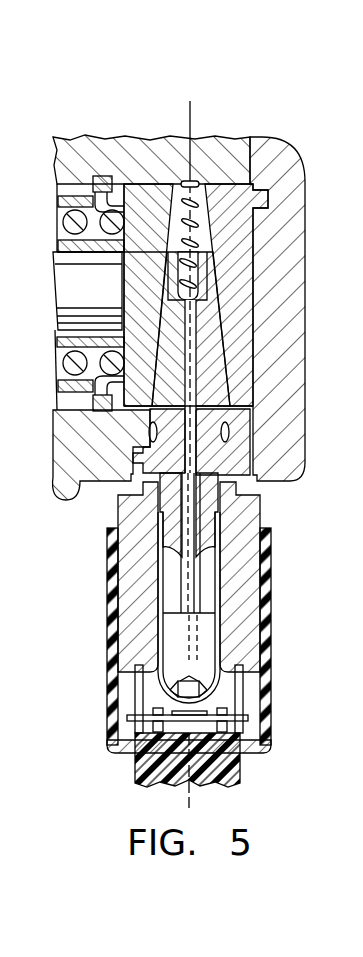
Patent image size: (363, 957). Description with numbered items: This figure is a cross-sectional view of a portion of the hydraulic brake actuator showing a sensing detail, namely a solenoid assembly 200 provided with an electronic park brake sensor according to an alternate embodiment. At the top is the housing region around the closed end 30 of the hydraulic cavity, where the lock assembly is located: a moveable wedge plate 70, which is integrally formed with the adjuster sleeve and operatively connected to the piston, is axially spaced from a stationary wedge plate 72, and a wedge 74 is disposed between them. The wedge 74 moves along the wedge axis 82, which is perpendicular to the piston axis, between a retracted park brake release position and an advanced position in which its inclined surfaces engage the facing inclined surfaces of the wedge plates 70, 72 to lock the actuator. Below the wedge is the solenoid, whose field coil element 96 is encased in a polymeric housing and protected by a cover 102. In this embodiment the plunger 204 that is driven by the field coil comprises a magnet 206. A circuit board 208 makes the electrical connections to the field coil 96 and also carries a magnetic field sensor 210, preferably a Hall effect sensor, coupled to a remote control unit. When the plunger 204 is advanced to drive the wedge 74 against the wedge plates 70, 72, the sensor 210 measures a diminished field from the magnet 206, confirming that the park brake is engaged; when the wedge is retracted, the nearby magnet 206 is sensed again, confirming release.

The closed end 30 is at (300, 232).
The moveable wedge plate 70 is at (137, 190).
The stationary wedge plate 72 is at (237, 203).
The wedge 74 is at (213, 342).
The wedge axis 82 is at (188, 128).
The field coil element 96 is at (90, 472).
The cover 102 is at (110, 588).
The solenoid assembly 200 is at (98, 766).
The plunger 204 is at (200, 640).
The magnet 206 is at (193, 685).
The circuit board 208 is at (228, 718).
The magnetic field sensor 210 is at (173, 713).